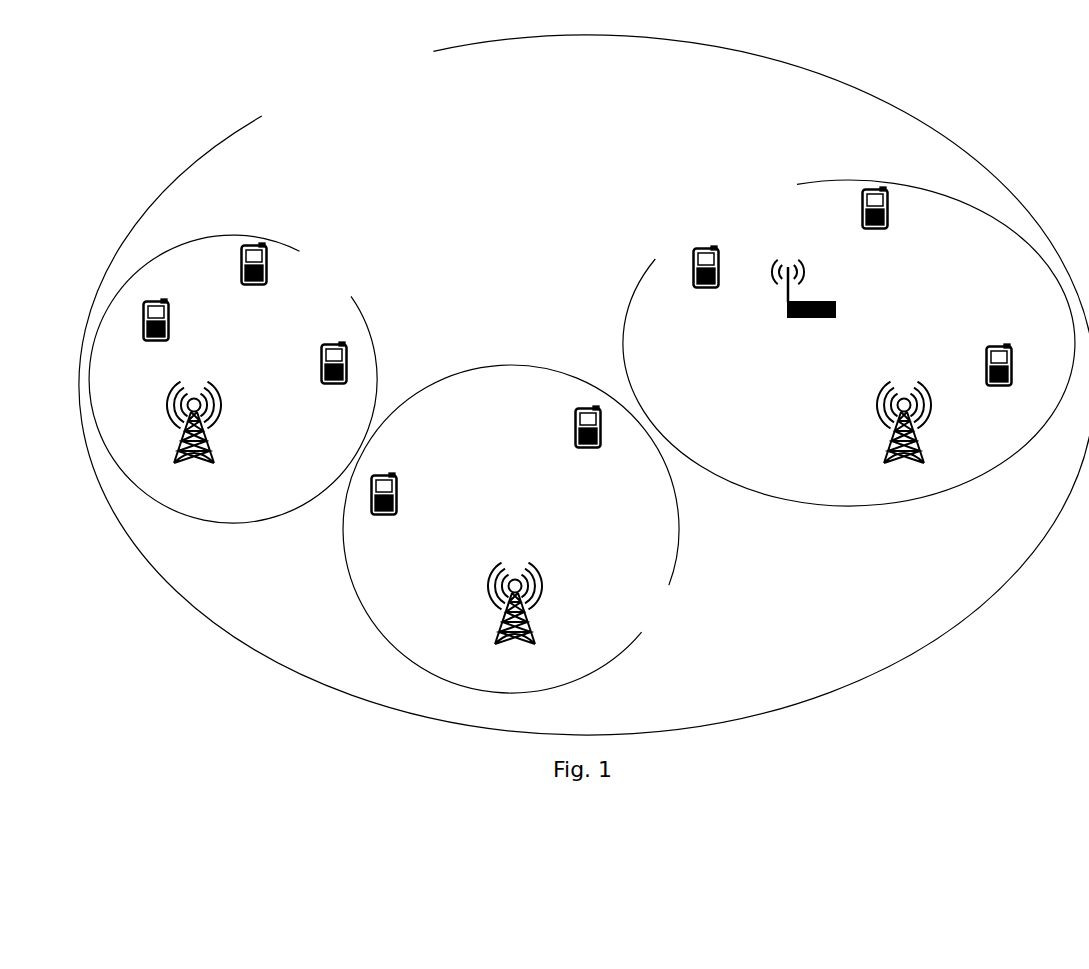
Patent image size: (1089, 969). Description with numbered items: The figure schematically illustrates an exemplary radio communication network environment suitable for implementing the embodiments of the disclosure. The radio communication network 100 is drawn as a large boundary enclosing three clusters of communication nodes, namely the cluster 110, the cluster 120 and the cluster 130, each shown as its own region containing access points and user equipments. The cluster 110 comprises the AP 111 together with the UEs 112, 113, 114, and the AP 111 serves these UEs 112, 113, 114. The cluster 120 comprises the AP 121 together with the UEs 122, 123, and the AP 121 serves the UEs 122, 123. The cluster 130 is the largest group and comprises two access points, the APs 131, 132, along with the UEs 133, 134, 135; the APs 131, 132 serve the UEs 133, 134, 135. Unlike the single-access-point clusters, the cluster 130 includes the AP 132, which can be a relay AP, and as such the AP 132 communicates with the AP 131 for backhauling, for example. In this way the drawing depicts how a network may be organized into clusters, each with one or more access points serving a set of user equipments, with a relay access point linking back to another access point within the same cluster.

The radio communication network 100 is at (584, 385).
The cluster 110 is at (258, 379).
The cluster 120 is at (529, 529).
The cluster 130 is at (849, 343).
The AP 111 is at (191, 441).
The UE 112 is at (150, 336).
The UE 113 is at (249, 282).
The UE 114 is at (329, 379).
The AP 121 is at (511, 622).
The UE 122 is at (383, 511).
The UE 123 is at (584, 444).
The AP 131 is at (904, 437).
The AP 132 is at (807, 304).
The UE 133 is at (870, 224).
The UE 134 is at (993, 381).
The UE 135 is at (700, 282).